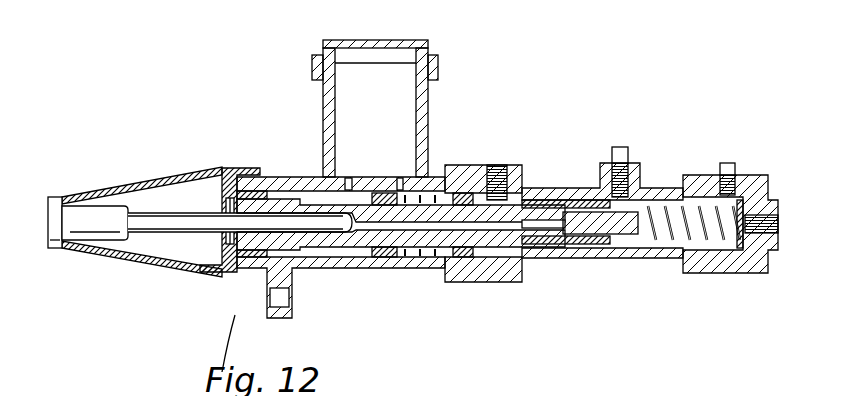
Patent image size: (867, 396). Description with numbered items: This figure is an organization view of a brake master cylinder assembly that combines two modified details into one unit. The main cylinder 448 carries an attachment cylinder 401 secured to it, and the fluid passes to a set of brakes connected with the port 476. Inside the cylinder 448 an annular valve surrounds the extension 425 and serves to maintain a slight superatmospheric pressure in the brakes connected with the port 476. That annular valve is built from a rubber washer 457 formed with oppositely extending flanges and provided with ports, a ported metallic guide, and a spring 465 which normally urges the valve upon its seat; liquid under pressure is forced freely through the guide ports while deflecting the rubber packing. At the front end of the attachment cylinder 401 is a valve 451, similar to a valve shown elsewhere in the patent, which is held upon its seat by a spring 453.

The attachment cylinder 401 is at (603, 258).
The extension 425 is at (416, 250).
The cylinder 448 is at (352, 268).
The valve 451 is at (752, 250).
The spring 453 is at (690, 236).
The rubber washer 457 is at (468, 262).
The spring 465 is at (440, 259).
The port 476 is at (498, 166).